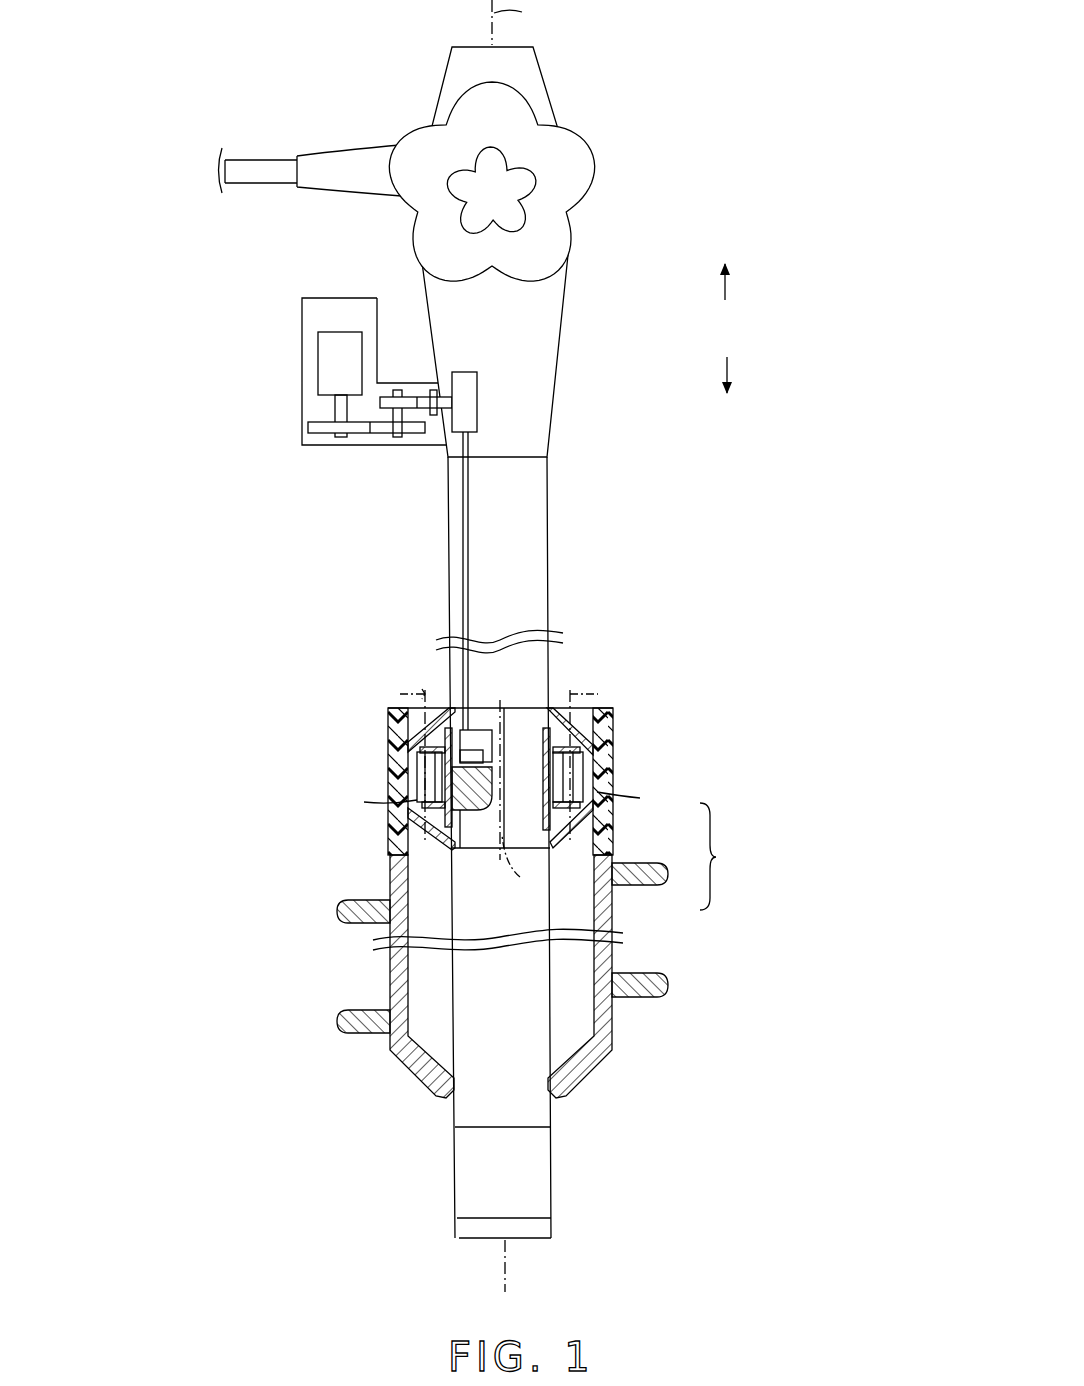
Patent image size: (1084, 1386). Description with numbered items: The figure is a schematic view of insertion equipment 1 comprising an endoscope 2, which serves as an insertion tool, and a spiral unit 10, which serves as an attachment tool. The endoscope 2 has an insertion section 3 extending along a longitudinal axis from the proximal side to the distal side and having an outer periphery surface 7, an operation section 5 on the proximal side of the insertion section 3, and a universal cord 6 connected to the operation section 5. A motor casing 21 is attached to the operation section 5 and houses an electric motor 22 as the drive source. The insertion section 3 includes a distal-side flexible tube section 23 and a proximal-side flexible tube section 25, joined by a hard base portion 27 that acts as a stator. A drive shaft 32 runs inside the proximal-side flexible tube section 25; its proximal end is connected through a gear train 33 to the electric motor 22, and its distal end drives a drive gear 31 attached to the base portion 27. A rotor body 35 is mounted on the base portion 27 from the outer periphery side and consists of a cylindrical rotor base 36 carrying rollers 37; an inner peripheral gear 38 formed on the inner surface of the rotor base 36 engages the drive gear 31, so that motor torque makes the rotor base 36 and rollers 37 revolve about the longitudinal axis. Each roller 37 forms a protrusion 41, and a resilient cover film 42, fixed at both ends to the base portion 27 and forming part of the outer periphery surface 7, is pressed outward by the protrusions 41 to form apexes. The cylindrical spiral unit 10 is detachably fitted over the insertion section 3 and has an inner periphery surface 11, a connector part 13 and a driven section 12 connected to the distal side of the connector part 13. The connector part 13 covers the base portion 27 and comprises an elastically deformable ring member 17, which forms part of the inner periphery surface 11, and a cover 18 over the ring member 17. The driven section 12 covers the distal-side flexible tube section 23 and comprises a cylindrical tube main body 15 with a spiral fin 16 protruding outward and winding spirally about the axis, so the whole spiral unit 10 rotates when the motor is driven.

The insertion equipment 1 is at (506, 646).
The endoscope 2 is at (652, 458).
The insertion section 3 is at (524, 862).
The operation section 5 is at (535, 350).
The universal cord 6 is at (333, 160).
The outer periphery surface 7 is at (453, 985).
The spiral unit 10 is at (524, 985).
The inner periphery surface 11 is at (590, 1022).
The driven section 12 is at (620, 910).
The connector part 13 is at (617, 820).
The tube main body 15 is at (390, 935).
The spiral fin 16 is at (358, 907).
The ring member 17 is at (613, 715).
The cover 18 is at (517, 770).
The motor casing 21 is at (340, 297).
The electric motor 22 is at (318, 371).
The distal-side flexible tube section 23 is at (535, 1063).
The proximal-side flexible tube section 25 is at (523, 606).
The base portion 27 is at (475, 820).
The drive gear 31 is at (494, 762).
The drive shaft 32 is at (469, 571).
The gear train 33 is at (388, 440).
The rotor body 35 is at (560, 826).
The rotor base 36 is at (443, 833).
The rollers 37 is at (418, 788).
The inner peripheral gear 38 is at (492, 737).
The protrusions 41 is at (593, 752).
The cover film 42 is at (420, 760).